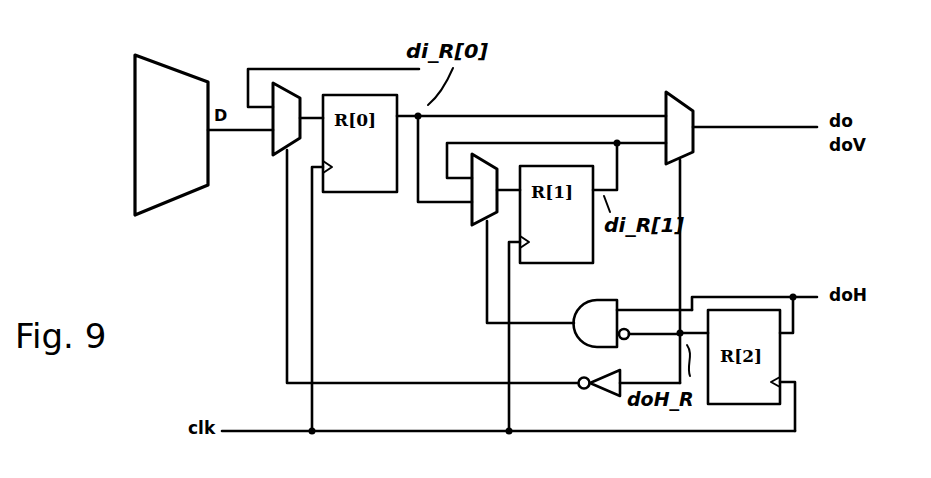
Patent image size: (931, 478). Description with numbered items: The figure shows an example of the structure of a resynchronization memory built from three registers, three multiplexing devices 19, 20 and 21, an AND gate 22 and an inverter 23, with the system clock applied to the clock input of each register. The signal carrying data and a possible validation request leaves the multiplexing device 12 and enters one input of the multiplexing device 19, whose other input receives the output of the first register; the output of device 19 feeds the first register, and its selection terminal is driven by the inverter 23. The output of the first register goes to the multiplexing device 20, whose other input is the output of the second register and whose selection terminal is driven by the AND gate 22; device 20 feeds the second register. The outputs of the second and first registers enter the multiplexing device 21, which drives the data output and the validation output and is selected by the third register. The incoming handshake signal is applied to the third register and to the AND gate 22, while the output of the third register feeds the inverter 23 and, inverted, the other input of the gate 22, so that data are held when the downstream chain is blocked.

The multiplexing device 12 is at (135, 135).
The multiplexing device 19 is at (263, 150).
The multiplexing device 20 is at (462, 216).
The multiplexing device 21 is at (700, 108).
The AND gate 22 is at (618, 299).
The inverter 23 is at (600, 398).